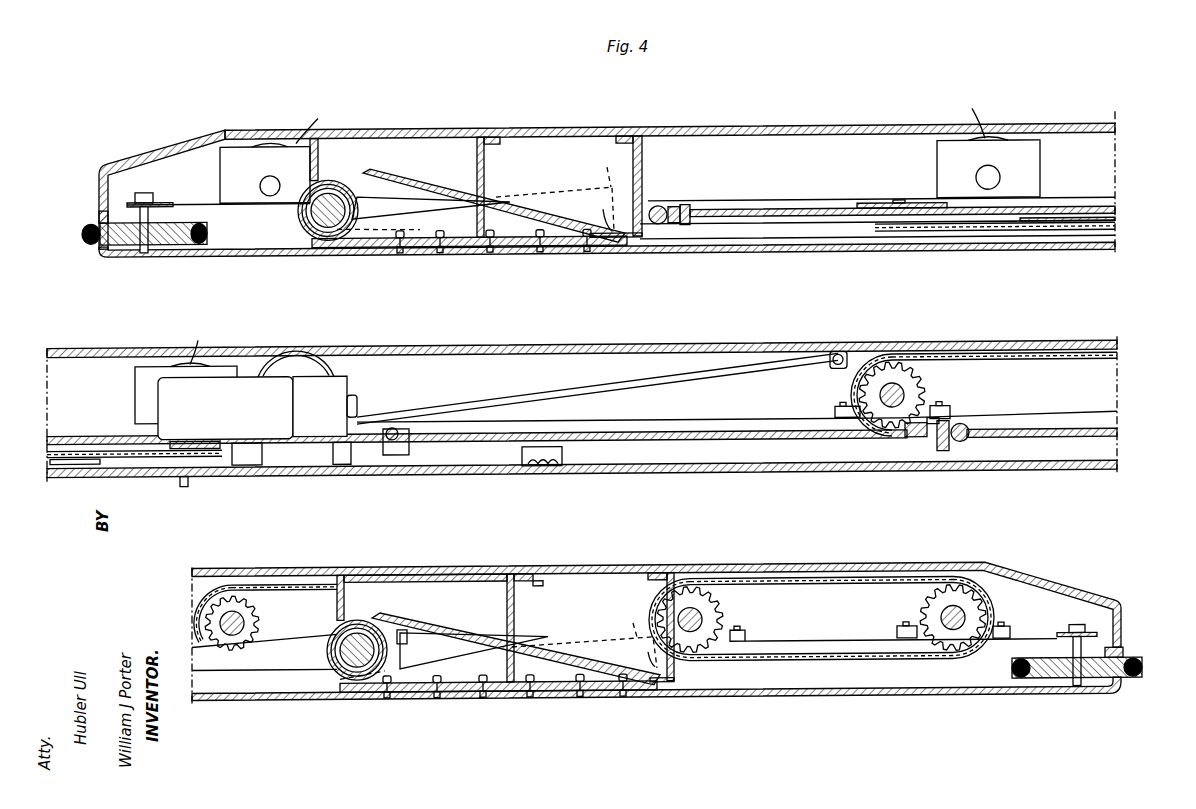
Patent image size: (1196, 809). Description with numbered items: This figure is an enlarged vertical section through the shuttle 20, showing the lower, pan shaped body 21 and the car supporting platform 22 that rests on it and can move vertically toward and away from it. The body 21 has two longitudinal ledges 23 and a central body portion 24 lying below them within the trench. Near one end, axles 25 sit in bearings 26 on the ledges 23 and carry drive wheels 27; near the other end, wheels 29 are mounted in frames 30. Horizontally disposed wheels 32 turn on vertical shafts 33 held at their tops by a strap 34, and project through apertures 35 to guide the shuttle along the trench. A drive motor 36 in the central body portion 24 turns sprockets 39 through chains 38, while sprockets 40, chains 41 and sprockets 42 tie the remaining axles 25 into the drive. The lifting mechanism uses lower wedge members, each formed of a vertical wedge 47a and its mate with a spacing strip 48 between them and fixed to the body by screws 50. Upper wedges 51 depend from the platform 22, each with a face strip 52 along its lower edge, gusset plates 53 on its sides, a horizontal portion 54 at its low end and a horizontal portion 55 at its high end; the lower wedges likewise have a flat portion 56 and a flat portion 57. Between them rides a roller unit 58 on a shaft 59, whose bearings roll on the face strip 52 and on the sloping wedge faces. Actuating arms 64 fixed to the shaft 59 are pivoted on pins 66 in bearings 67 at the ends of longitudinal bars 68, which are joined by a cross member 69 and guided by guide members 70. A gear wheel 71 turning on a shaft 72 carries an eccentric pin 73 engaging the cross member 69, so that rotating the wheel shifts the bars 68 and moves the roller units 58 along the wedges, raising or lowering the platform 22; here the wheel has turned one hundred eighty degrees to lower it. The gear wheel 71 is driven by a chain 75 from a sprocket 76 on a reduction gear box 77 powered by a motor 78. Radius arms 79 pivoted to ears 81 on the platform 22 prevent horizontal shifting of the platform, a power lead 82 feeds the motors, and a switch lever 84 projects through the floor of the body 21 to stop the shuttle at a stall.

The shuttle 20 is at (1045, 582).
The body 21 is at (278, 257).
The car supporting platform 22 is at (668, 349).
The longitudinal ledges 23 is at (222, 209).
The central body portion 24 is at (335, 249).
The axles 25 is at (906, 401).
The bearings 26 is at (835, 416).
The wheels 27 is at (925, 393).
The wheels 29 is at (587, 229).
The frames 30 is at (254, 170).
The horizontally disposed wheels 32 is at (88, 245).
The vertical shaft 33 is at (150, 223).
The strap 34 is at (154, 198).
The apertures 35 is at (99, 217).
The drive motor 36 is at (461, 664).
The chains 38 is at (310, 598).
The sprockets 39 is at (241, 613).
The sprockets 40 is at (700, 596).
The chains 41 is at (1075, 370).
The sprockets 42 is at (953, 590).
The vertical wedge 47a is at (470, 248).
The spacing strip 48 is at (490, 258).
The screws 50 is at (440, 258).
The upper wedges 51 is at (455, 142).
The face strip 52 is at (415, 190).
The gusset plates 53 is at (440, 588).
The horizontal portion 54 is at (330, 185).
The horizontal portion 55 is at (602, 226).
The flat portion 56 is at (361, 456).
The flat portion 57 is at (607, 176).
The roller unit 58 is at (352, 213).
The shaft 59 is at (310, 218).
The actuating arm 64 is at (658, 211).
The pins 66 is at (676, 212).
The bearings 67 is at (690, 216).
The longitudinal bars 68 is at (790, 214).
The cross member 69 is at (872, 210).
The guide members 70 is at (905, 445).
The gear wheel 71 is at (878, 235).
The shaft 72 is at (1035, 226).
The eccentric pin 73 is at (902, 208).
The chain 75 is at (142, 460).
The sprocket 76 is at (192, 443).
The reduction gear box 77 is at (237, 417).
The motor 78 is at (352, 400).
The radius arms 79 is at (680, 392).
The ears 81 is at (838, 358).
The power lead 82 is at (562, 462).
The switch lever 84 is at (188, 487).